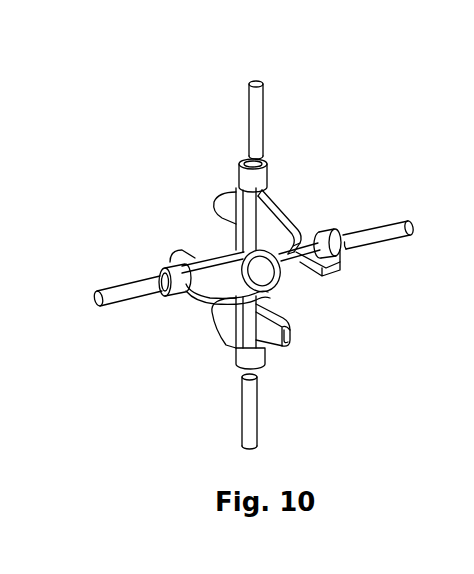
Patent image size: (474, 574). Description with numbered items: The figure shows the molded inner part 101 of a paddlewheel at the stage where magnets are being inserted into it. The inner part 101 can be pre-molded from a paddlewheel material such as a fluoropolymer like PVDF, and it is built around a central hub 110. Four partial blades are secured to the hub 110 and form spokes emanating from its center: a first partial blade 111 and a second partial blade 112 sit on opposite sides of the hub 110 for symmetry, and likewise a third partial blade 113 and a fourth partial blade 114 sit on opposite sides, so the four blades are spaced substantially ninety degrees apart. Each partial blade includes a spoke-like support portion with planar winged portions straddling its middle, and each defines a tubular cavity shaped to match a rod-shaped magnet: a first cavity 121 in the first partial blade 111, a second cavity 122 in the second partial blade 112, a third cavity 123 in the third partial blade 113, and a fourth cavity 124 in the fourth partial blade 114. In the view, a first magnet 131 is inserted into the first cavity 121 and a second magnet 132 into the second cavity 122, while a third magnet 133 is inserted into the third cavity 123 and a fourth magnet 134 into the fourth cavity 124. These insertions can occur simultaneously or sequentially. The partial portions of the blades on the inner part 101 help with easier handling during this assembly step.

The inner part 101 is at (162, 147).
The hub 110 is at (284, 284).
The first partial blade 111 is at (272, 214).
The second partial blade 112 is at (276, 331).
The third partial blade 113 is at (175, 249).
The fourth partial blade 114 is at (332, 259).
The first cavity 121 is at (262, 160).
The second cavity 122 is at (256, 368).
The third cavity 123 is at (160, 278).
The fourth cavity 124 is at (342, 233).
The first magnet 131 is at (255, 118).
The second magnet 132 is at (247, 418).
The third magnet 133 is at (127, 293).
The fourth magnet 134 is at (405, 224).